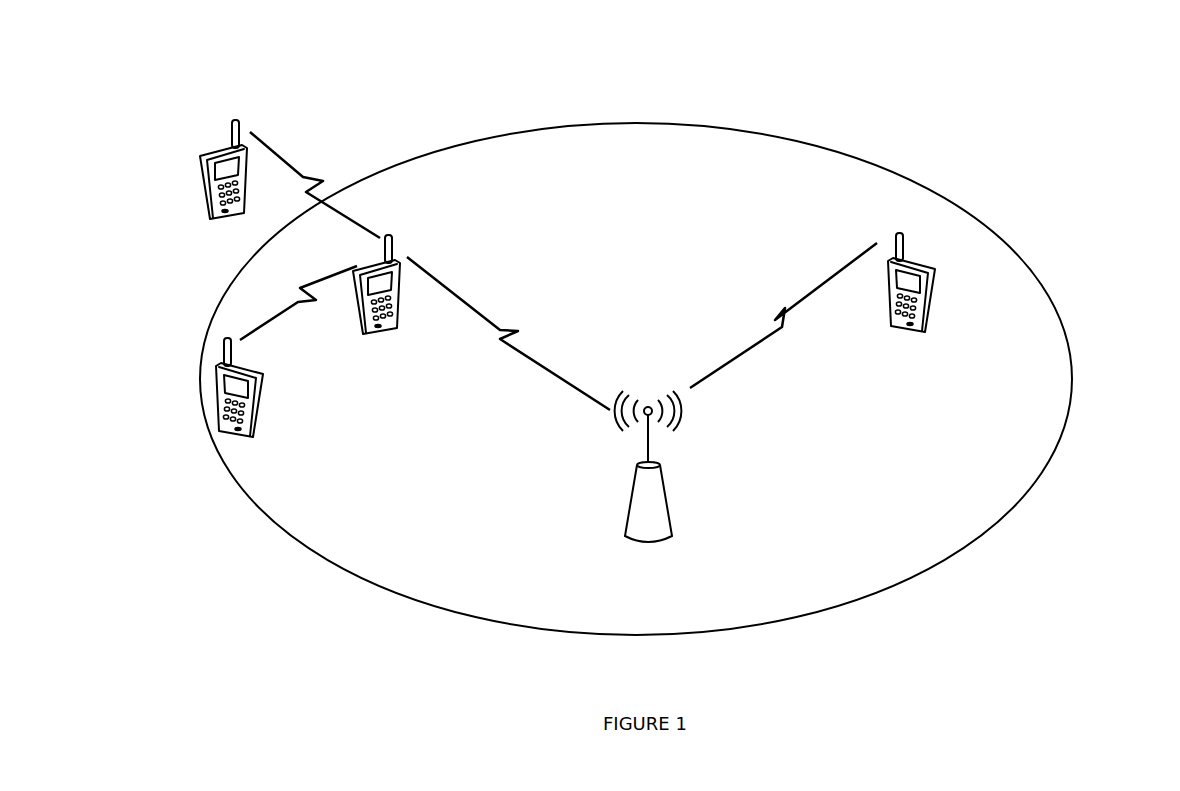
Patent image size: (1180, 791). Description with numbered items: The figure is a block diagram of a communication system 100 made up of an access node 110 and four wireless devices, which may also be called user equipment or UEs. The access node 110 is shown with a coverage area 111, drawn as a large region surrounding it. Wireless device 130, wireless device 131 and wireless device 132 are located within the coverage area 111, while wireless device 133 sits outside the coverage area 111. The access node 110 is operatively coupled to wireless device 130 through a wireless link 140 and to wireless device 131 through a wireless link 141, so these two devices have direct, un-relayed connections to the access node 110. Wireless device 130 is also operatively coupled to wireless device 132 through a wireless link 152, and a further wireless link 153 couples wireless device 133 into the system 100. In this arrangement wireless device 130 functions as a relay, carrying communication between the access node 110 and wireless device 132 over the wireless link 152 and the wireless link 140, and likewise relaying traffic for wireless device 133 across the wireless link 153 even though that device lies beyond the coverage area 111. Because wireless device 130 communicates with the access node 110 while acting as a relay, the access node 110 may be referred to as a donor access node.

The communication system 100 is at (1090, 61).
The access node 110 is at (663, 535).
The coverage area 111 is at (666, 167).
The wireless device 130 is at (380, 333).
The wireless device 131 is at (923, 318).
The wireless device 132 is at (257, 432).
The wireless device 133 is at (206, 150).
The wireless link 140 is at (502, 340).
The wireless link 141 is at (778, 308).
The wireless link 152 is at (272, 317).
The wireless link 153 is at (284, 156).